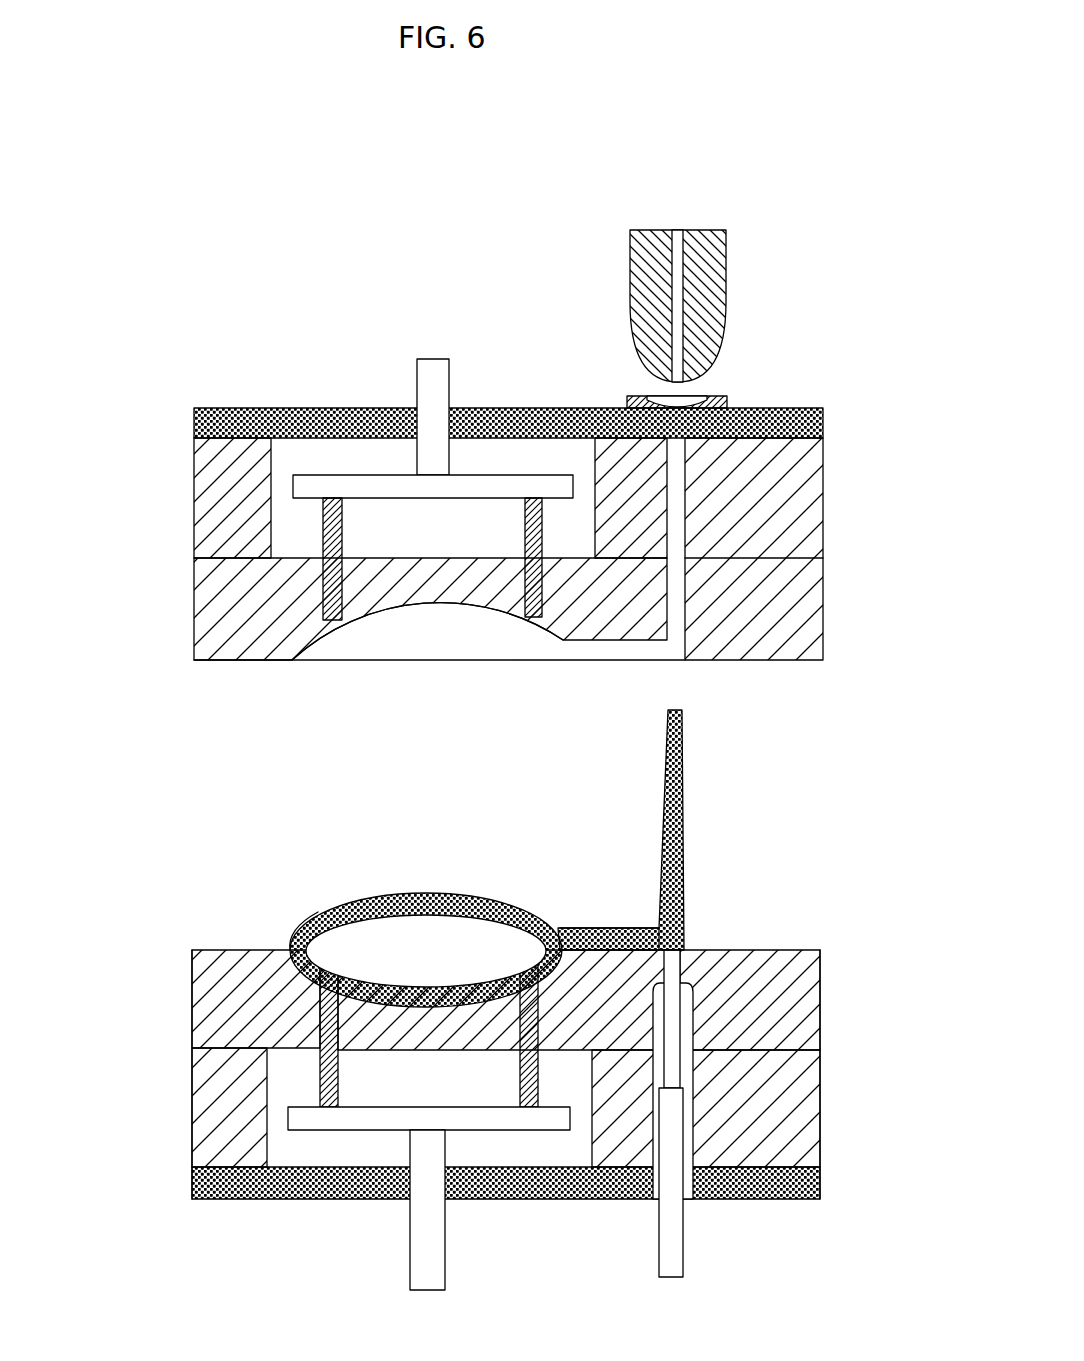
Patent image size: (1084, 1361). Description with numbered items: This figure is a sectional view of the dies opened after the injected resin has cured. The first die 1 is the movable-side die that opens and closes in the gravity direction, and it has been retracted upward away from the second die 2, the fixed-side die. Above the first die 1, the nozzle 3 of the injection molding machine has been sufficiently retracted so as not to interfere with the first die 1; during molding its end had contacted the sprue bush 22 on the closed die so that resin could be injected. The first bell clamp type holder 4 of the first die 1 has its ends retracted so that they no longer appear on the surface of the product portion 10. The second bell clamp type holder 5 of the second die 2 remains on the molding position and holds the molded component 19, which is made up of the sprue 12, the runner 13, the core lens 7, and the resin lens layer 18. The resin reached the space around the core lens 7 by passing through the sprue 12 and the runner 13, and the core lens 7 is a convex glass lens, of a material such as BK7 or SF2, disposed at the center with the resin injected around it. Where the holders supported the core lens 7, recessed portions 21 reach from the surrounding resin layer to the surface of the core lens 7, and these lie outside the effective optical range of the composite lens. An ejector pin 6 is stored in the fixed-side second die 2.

The first die 1 is at (503, 532).
The second die 2 is at (499, 1127).
The nozzle 3 is at (705, 280).
The first bell clamp type holder 4 is at (323, 527).
The second bell clamp type holder 5 is at (318, 1068).
The ejector pin 6 is at (673, 1250).
The core lens 7 is at (327, 948).
The product portion 10 is at (347, 633).
The sprue 12 is at (673, 920).
The runner 13 is at (615, 937).
The resin lens layer 18 is at (412, 993).
The molded component 19 is at (549, 857).
The recessed portions 21 is at (323, 928).
The sprue bush 22 is at (762, 422).